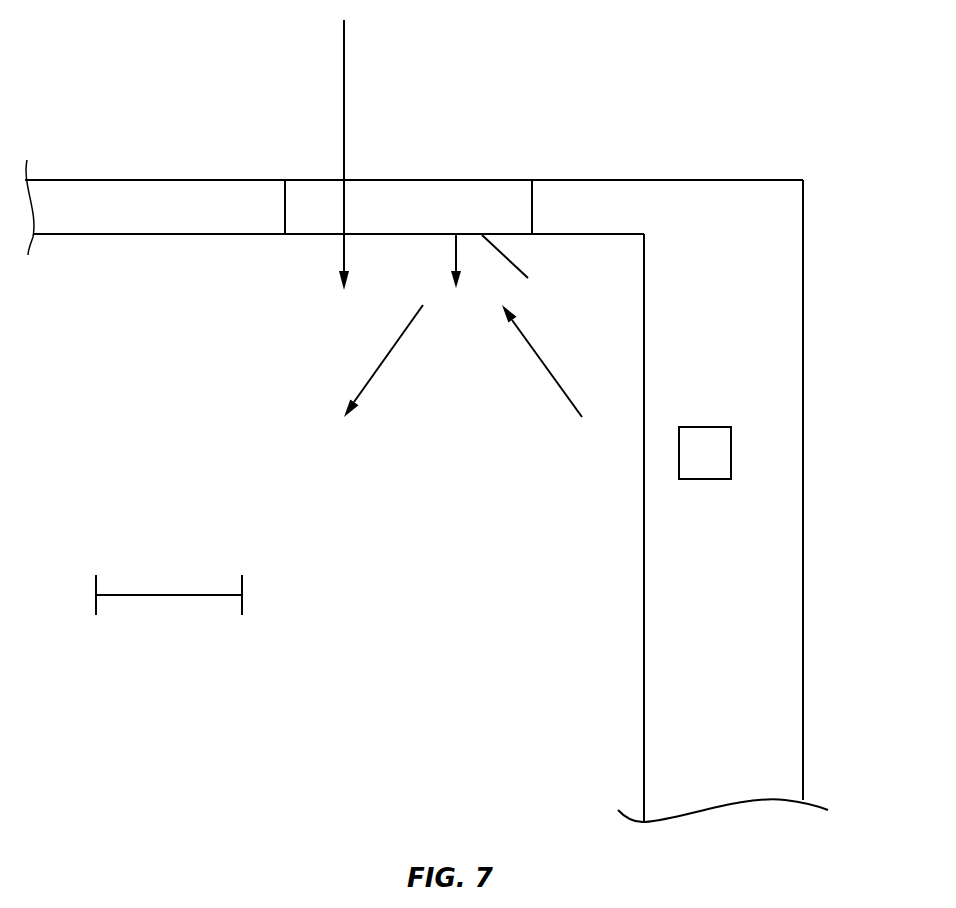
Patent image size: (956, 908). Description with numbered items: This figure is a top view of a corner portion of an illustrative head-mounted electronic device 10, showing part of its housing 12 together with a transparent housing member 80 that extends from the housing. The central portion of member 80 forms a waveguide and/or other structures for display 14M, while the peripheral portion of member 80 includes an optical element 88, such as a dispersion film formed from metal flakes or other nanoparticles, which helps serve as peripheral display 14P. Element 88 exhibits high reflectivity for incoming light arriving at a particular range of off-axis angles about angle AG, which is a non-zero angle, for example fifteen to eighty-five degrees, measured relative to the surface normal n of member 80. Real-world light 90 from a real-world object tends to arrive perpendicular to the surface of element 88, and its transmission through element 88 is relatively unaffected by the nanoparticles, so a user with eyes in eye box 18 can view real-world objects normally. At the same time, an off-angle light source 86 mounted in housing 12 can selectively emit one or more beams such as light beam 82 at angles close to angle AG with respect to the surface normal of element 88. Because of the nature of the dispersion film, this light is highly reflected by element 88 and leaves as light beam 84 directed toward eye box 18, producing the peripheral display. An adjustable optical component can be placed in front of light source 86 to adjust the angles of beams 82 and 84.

The electronic device 10 is at (884, 72).
The housing 12 is at (791, 708).
The peripheral display 14P is at (560, 78).
The display 14M is at (285, 270).
The eye box 18 is at (163, 596).
The transparent housing member 80 is at (153, 180).
The light beam 82 is at (557, 385).
The light beam 84 is at (368, 386).
The light source 86 is at (705, 480).
The optical element 88 is at (452, 180).
The real-world light 90 is at (344, 76).
The surface normal n is at (448, 261).
The angle AG is at (478, 263).